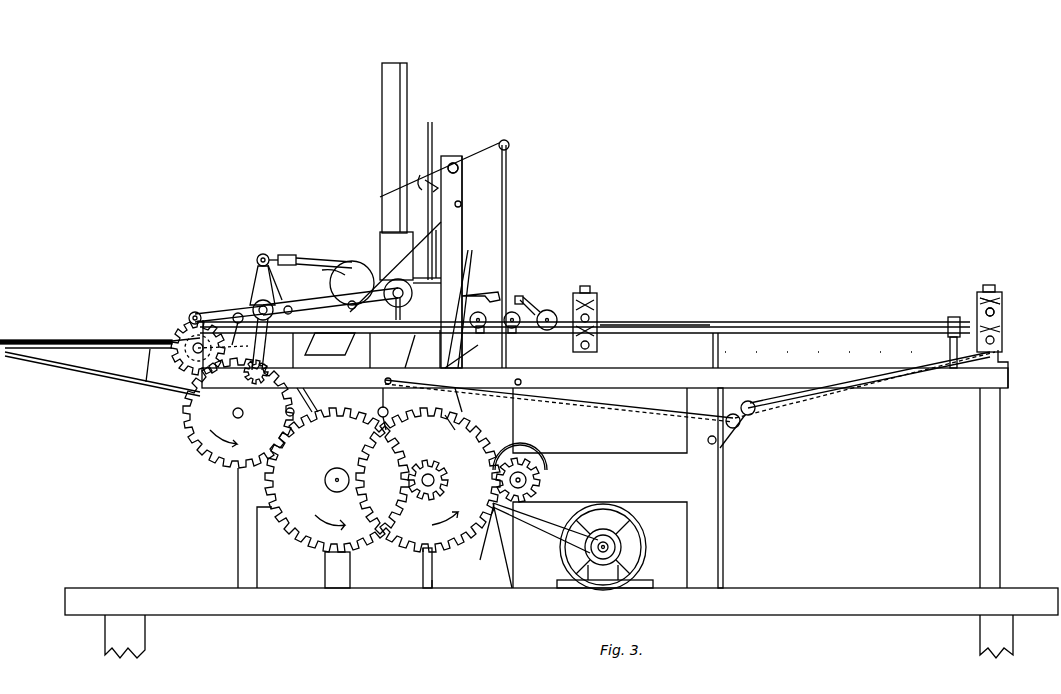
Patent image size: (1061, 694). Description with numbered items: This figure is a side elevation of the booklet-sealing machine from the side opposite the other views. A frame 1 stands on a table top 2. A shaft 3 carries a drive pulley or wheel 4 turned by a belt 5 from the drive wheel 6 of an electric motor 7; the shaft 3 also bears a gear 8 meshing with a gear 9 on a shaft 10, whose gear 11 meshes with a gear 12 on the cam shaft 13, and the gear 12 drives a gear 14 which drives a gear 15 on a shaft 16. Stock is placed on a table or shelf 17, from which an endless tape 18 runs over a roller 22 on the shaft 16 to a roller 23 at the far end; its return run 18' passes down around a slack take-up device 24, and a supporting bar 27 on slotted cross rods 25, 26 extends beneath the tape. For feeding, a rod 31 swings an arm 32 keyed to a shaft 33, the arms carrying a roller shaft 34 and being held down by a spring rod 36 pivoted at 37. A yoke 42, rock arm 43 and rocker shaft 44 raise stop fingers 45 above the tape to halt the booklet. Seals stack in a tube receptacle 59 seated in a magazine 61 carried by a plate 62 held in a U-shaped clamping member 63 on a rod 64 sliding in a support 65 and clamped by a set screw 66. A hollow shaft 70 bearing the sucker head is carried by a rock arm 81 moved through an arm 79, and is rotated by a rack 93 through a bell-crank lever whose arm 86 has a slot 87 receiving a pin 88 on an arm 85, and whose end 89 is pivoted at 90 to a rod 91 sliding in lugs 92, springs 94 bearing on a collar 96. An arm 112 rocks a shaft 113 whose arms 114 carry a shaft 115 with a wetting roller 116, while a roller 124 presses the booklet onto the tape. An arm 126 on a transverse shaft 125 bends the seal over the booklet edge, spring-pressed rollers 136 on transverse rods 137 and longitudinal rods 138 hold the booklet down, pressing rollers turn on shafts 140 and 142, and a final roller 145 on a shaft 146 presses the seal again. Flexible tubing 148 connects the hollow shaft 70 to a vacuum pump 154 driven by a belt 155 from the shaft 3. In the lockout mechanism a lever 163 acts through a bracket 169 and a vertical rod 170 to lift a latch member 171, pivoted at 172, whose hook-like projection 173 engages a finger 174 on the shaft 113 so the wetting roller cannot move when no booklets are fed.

The frame 1 is at (455, 156).
The table top 2 is at (112, 590).
The shaft 3 is at (526, 478).
The drive pulley or wheel 4 is at (528, 455).
The belt 5 is at (536, 540).
The drive wheel 6 is at (603, 559).
The electric motor 7 is at (645, 540).
The gear 8 is at (538, 485).
The gear 9 is at (420, 548).
The shaft 10 is at (440, 476).
The gear 11 is at (446, 484).
The gear 12 is at (305, 545).
The cam shaft 13 is at (325, 480).
The gear 14 is at (210, 458).
The gear 15 is at (180, 332).
The shaft 16 is at (195, 362).
The table or shelf 17 is at (60, 340).
The endless belt or tape 18 is at (597, 352).
The rod 18' is at (559, 404).
The roller 22 is at (223, 347).
The roller 23 is at (1003, 330).
The slack take up device 24 is at (740, 426).
The cross rod 25 is at (722, 340).
The cross rod 26 is at (255, 344).
The supporting bar 27 is at (880, 332).
The rod 31 is at (240, 314).
The arm 32 is at (195, 312).
The shaft 33 is at (272, 306).
The shaft 34 is at (190, 316).
The rod 36 is at (255, 375).
The pivot 37 is at (320, 303).
The yoke 42 is at (397, 426).
The rock arm 43 is at (287, 409).
The rocker shaft 44 is at (385, 381).
The fingers or arms 45 is at (419, 351).
The receptacle 59 is at (382, 176).
The magazine 61 is at (380, 236).
The plate 62 is at (441, 290).
The U-shaped clamping member 63 is at (440, 278).
The rod 64 is at (437, 250).
The support 65 is at (428, 165).
The set screw 66 is at (428, 189).
The hollow shaft 70 is at (412, 297).
The arm 79 is at (368, 358).
The rock arm 81 is at (358, 275).
The arm 85 is at (318, 400).
The arm of bell-crank lever 86 is at (330, 344).
The slot 87 is at (311, 350).
The pin 88 is at (307, 304).
The end of bell-crank lever 89 is at (258, 272).
The pivot 90 is at (257, 259).
The rod 91 is at (270, 256).
The lugs 92 is at (284, 255).
The rack 93 is at (488, 292).
The spring 94 is at (280, 282).
The collar 96 is at (290, 256).
The arm 112 is at (471, 258).
The rock shaft 113 is at (461, 204).
The arms 114 is at (418, 236).
The shaft 115 is at (366, 300).
The wetting roller 116 is at (328, 281).
The roller 124 is at (401, 316).
The shaft 125 is at (521, 382).
The arm 126 is at (497, 360).
The spring-pressed rollers 136 is at (551, 302).
The transverse rods 137 is at (527, 297).
The longitudinal rods 138 is at (704, 322).
The shaft 140 is at (590, 318).
The shaft 142 is at (590, 345).
The roller 145 is at (1003, 300).
The shaft 146 is at (995, 312).
The flexible tubing 148 is at (447, 349).
The vacuum pump 154 is at (460, 582).
The belt 155 is at (523, 513).
The lever 163 is at (478, 437).
The bracket 169 is at (515, 575).
The rod 170 is at (506, 228).
The latch-member 171 is at (503, 140).
The pivot 172 is at (458, 170).
The hook-like projection 173 is at (382, 196).
The finger 174 is at (447, 187).